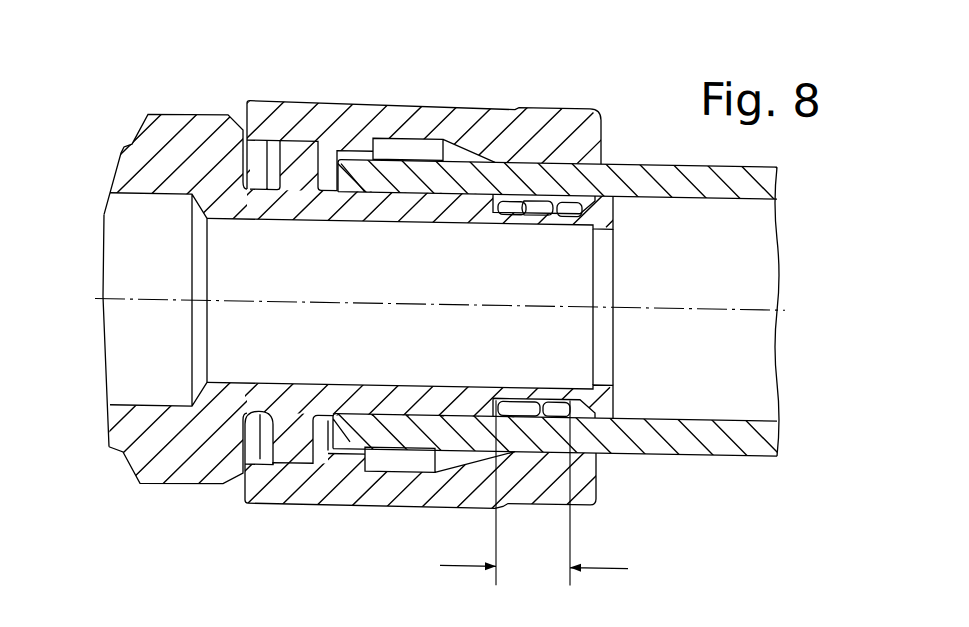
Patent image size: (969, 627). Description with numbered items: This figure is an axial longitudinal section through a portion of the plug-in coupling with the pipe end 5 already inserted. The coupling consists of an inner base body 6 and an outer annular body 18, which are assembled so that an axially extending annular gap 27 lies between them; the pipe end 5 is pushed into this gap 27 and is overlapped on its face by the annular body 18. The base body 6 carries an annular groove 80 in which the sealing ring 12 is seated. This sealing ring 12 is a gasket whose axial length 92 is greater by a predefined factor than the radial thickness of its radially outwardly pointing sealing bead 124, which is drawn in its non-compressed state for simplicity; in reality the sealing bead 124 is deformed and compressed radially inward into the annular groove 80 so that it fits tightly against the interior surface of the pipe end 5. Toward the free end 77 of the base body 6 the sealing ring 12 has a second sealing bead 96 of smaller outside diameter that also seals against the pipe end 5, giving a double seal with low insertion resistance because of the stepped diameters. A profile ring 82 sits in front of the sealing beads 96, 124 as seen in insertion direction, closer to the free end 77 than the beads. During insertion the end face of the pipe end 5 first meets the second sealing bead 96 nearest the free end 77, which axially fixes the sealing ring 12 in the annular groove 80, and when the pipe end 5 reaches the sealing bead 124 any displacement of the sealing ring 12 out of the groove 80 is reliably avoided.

The pipe end 5 is at (712, 448).
The base body 6 is at (189, 465).
The sealing ring 12 is at (502, 393).
The annular body 18 is at (315, 488).
The annular gap 27 is at (327, 167).
The free end 77 is at (612, 253).
The annular groove 80 is at (500, 200).
The profile ring 82 is at (549, 398).
The axial length 92 is at (561, 497).
The second sealing bead 96 is at (552, 189).
The sealing bead 124 is at (528, 191).